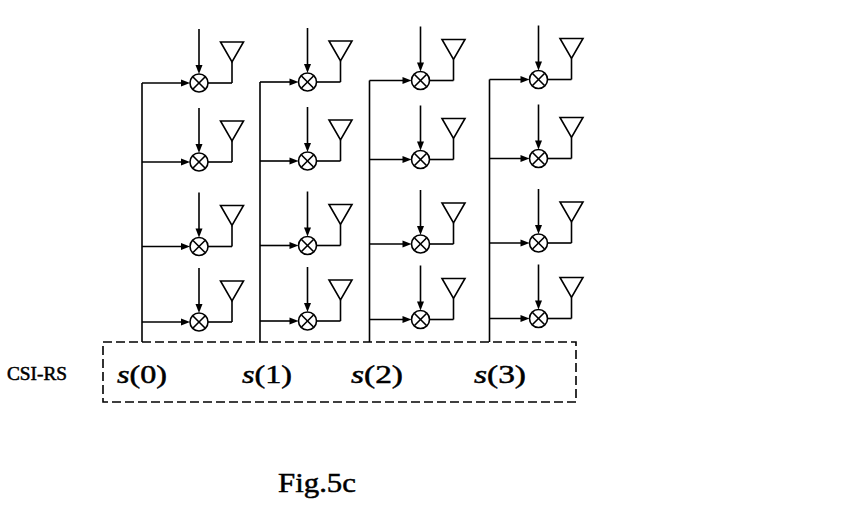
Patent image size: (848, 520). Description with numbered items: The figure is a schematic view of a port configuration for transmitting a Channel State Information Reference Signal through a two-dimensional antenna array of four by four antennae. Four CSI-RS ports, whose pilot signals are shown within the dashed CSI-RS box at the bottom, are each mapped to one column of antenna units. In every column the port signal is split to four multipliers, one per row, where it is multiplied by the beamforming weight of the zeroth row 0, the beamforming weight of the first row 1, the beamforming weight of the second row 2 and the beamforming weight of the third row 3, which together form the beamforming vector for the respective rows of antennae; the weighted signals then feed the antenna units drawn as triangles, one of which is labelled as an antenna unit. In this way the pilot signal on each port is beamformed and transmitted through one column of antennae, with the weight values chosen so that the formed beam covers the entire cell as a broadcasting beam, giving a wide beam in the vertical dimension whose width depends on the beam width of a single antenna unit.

The beamforming weight W0 0 is at (655, 33).
The beamforming weight W1 1 is at (362, 138).
The beamforming weight W2 2 is at (362, 222).
The beamforming weight W3 3 is at (362, 298).